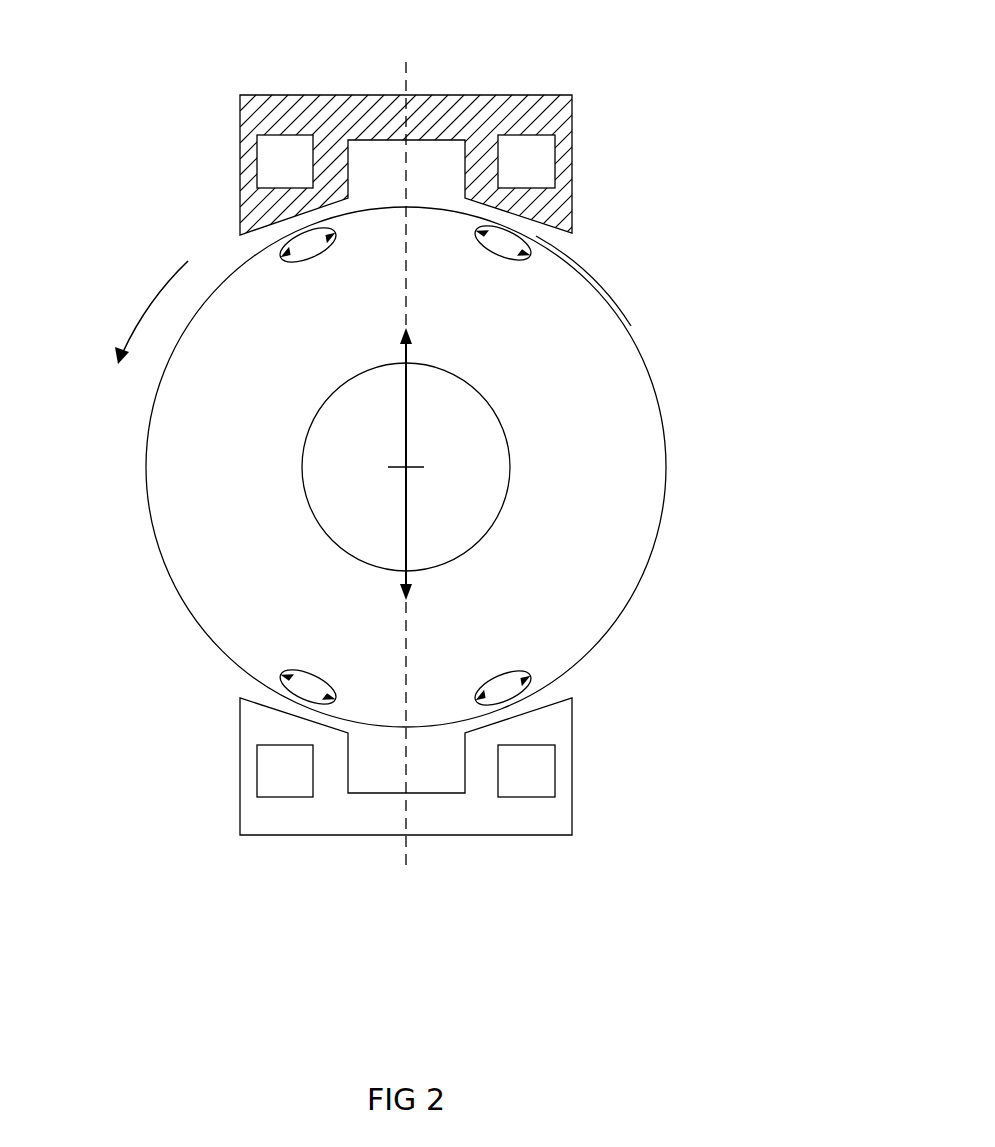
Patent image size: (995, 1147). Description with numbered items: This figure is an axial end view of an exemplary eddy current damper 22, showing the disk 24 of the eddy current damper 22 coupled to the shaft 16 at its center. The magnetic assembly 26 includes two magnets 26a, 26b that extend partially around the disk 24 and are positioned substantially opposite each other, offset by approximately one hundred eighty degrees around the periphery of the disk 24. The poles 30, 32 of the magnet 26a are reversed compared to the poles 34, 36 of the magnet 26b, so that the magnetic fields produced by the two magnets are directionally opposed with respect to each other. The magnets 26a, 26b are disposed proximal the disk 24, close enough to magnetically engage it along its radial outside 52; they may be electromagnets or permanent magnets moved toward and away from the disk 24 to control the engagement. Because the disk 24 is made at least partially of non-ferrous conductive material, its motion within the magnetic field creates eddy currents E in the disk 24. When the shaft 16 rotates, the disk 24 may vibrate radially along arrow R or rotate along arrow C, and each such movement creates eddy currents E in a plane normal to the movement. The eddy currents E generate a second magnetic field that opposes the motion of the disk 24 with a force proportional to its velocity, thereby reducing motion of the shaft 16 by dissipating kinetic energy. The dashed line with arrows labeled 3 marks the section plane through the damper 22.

The eddy current damper 22 is at (765, 53).
The disk 24 is at (627, 550).
The shaft 16 is at (471, 516).
The magnetic assembly 26 is at (262, 95).
The magnet 26a is at (564, 469).
The magnet 26b is at (567, 922).
The pole 30 is at (240, 195).
The pole 32 is at (572, 193).
The pole 34 is at (240, 783).
The pole 36 is at (572, 752).
The radial outside 52 is at (576, 263).
The section line 3- 3 is at (406, 62).
The arrow R is at (408, 414).
The arrow C is at (134, 312).
The eddy currents E is at (316, 258).